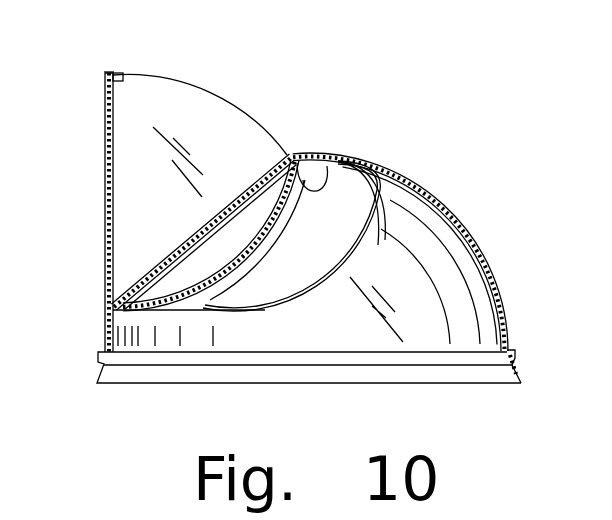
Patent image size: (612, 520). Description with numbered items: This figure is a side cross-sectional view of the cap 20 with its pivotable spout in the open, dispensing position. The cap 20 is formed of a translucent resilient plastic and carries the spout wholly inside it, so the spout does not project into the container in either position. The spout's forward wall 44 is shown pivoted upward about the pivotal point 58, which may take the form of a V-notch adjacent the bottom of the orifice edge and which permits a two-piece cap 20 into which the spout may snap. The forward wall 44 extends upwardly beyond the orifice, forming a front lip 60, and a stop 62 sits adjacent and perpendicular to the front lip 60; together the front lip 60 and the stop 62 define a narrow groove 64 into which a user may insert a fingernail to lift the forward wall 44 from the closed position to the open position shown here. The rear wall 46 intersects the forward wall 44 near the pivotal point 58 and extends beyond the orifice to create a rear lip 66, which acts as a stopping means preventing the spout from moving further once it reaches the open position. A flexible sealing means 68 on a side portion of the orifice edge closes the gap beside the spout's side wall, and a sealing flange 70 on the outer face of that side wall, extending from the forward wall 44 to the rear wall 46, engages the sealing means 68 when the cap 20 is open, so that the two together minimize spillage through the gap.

The cap 20 is at (485, 183).
The forward wall 44 is at (104, 196).
The rear wall 46 is at (330, 160).
The pivotal point 58 is at (130, 312).
The front lip 60 is at (107, 73).
The stop 62 is at (117, 77).
The groove 64 is at (116, 73).
The rear lip 66 is at (304, 158).
The sealing means 68 is at (252, 194).
The sealing flange 70 is at (206, 309).